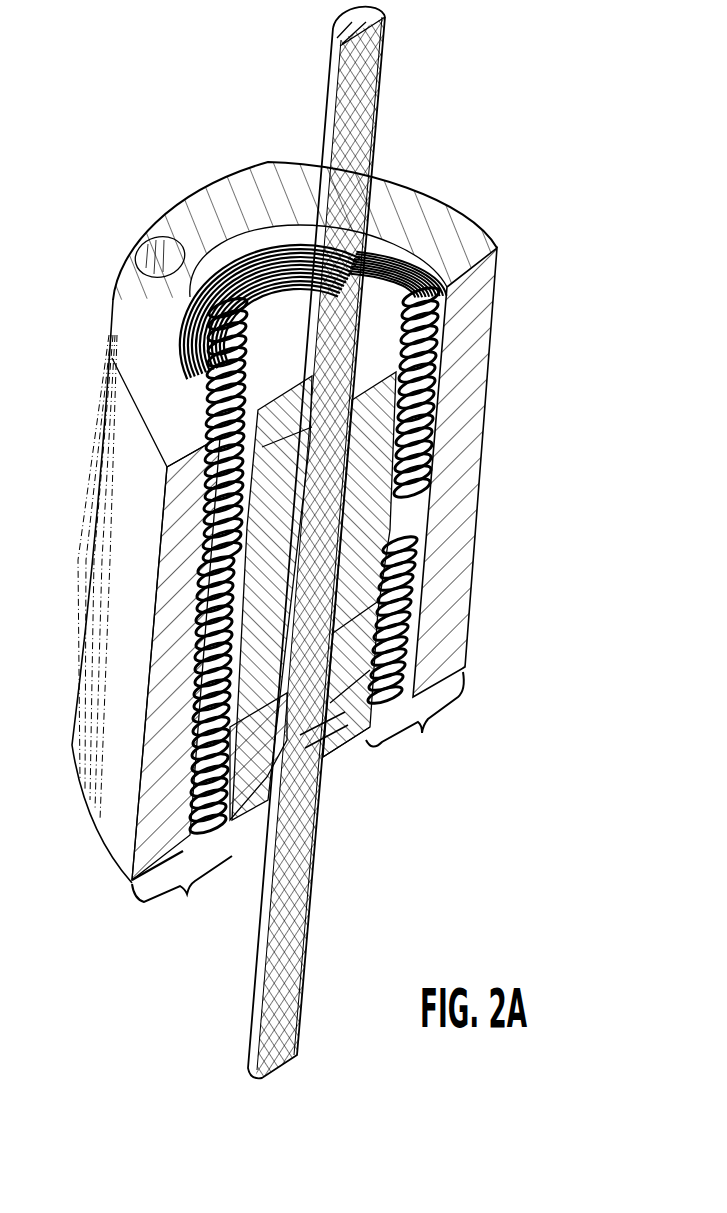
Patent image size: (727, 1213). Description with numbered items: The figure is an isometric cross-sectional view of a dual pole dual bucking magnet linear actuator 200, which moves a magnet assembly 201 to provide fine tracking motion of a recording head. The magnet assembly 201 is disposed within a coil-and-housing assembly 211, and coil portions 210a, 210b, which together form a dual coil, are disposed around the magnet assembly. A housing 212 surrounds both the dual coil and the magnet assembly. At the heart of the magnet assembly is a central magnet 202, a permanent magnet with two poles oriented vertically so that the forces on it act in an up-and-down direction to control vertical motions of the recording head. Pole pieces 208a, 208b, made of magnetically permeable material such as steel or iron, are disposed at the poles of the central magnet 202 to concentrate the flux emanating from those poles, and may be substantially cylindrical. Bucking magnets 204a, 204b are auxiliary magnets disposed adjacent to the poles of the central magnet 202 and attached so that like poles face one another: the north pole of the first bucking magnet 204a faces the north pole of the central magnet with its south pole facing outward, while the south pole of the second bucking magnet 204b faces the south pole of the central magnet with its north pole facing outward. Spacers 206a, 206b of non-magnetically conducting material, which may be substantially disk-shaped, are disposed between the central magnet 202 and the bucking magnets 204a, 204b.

The dual pole dual bucking magnet linear actuator 200 is at (530, 108).
The magnet assembly 201 is at (395, 524).
The central magnet 202 is at (262, 625).
The first bucking magnet 204a is at (267, 306).
The second bucking magnet 204b is at (343, 728).
The spacer 206a is at (367, 392).
The spacer 206b is at (268, 735).
The pole piece 208a is at (378, 432).
The pole piece 208b is at (360, 630).
The coil portion 210a is at (196, 381).
The coil portion 210b is at (195, 720).
The coil-and-housing assembly 211 is at (298, 801).
The housing 212 is at (158, 296).